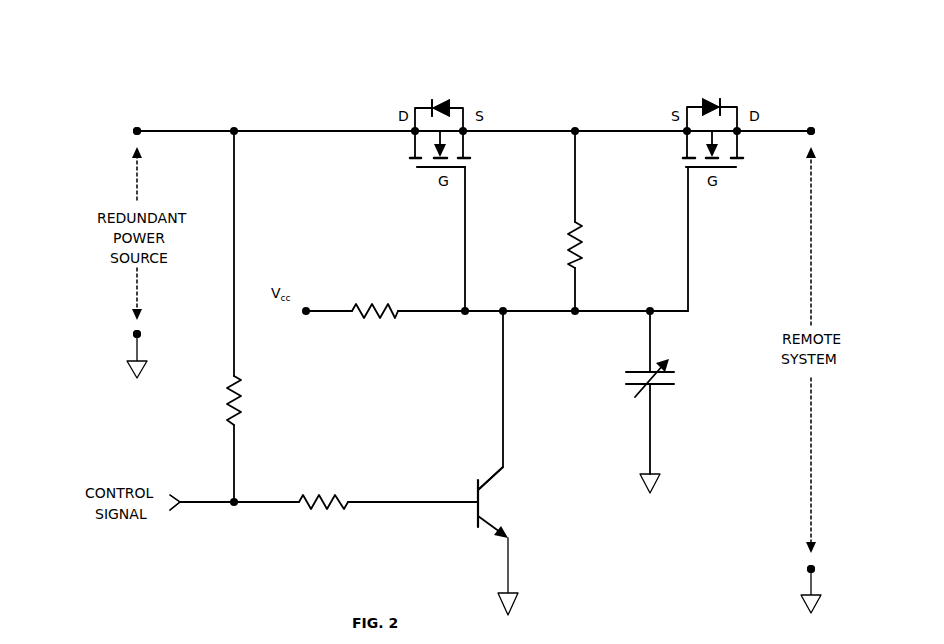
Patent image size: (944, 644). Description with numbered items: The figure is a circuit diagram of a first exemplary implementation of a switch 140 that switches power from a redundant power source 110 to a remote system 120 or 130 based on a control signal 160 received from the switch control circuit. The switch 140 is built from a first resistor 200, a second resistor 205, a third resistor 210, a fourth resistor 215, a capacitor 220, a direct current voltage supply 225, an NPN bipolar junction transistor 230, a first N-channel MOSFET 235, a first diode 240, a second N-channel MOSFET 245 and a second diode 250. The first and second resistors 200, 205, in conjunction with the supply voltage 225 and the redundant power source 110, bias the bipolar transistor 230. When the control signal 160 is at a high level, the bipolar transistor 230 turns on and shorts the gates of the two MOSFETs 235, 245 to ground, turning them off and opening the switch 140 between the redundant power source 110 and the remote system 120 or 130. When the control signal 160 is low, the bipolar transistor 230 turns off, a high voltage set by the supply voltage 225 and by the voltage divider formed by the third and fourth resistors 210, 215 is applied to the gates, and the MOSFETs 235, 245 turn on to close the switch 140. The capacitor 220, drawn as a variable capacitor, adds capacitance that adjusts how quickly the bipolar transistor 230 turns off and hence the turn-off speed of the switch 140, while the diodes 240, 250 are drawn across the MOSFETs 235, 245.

The switch 140 is at (100, 71).
The redundant power source 110 is at (74, 207).
The control signal 160 is at (86, 489).
The remote system 120 is at (851, 350).
The remote system 130 is at (838, 333).
The resistor R1 200 is at (214, 400).
The resistor R2 205 is at (323, 485).
The resistor R3 210 is at (375, 334).
The resistor R4 215 is at (556, 246).
The capacitor C 220 is at (670, 380).
The DC voltage supply Vcc 225 is at (289, 315).
The NPN bipolar junction transistor Q1 230 is at (502, 502).
The N-channel MOSFET Q2 235 is at (408, 167).
The N-channel MOSFET Q3 245 is at (742, 167).
The diode D1 240 is at (443, 99).
The diode D2 250 is at (713, 98).